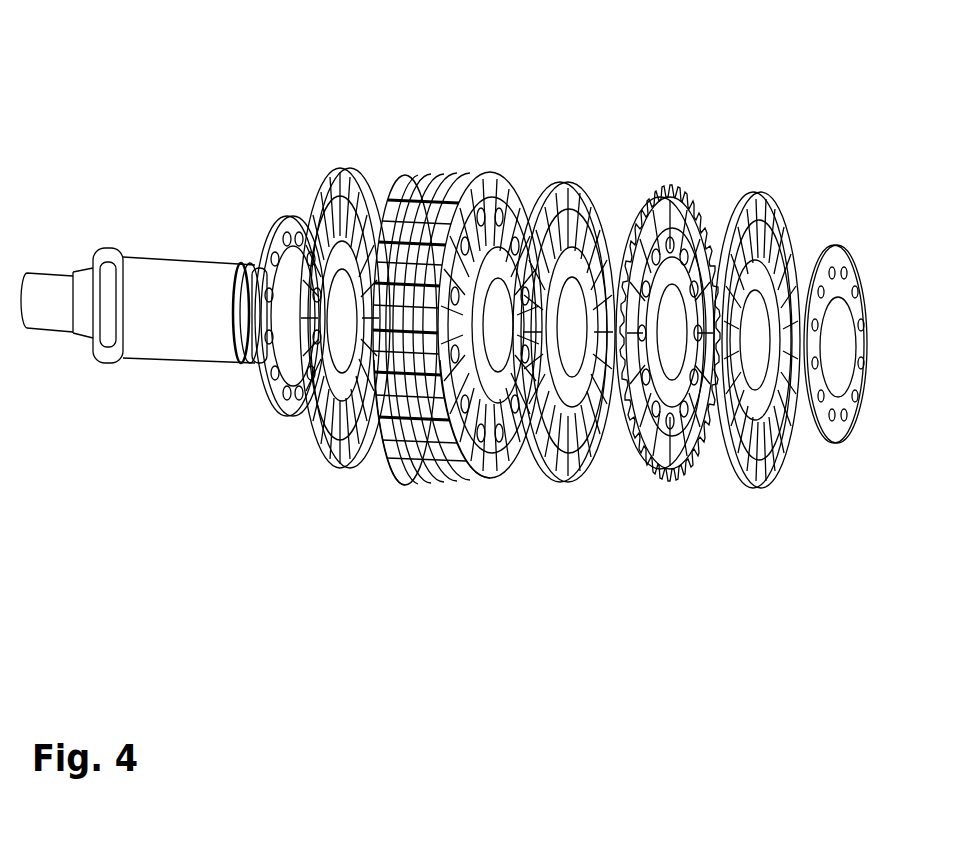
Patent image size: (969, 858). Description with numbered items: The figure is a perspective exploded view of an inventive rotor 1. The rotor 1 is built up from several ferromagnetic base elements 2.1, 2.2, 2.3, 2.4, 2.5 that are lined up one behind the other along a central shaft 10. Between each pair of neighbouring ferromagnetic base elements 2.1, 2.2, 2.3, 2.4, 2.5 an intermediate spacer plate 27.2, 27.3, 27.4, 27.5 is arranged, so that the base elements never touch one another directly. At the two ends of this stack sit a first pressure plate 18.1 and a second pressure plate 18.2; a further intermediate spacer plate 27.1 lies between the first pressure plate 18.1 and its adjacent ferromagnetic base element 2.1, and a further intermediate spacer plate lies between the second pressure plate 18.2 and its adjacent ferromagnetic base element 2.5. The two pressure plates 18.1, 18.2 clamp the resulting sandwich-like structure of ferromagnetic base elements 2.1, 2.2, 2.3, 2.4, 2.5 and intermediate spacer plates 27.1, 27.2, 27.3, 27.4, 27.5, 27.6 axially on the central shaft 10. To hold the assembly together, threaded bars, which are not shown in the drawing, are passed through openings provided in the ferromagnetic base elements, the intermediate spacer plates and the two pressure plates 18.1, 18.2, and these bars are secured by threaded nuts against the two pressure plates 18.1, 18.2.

The rotor 1 is at (175, 110).
The central shaft 10 is at (170, 340).
The first pressure plate 18.1 is at (273, 403).
The second pressure plate 18.2 is at (823, 442).
The intermediate spacer plate 27.1 is at (320, 468).
The intermediate spacer plate 27.2 is at (412, 498).
The intermediate spacer plate 27.3 is at (453, 496).
The intermediate spacer plate 27.4 is at (478, 150).
The intermediate spacer plate 27.5 is at (583, 187).
The intermediate spacer plate 27.6 is at (740, 485).
The ferromagnetic base element 2.1 is at (403, 478).
The ferromagnetic base element 2.2 is at (433, 477).
The ferromagnetic base element 2.3 is at (470, 174).
The ferromagnetic base element 2.4 is at (488, 175).
The ferromagnetic base element 2.5 is at (697, 187).